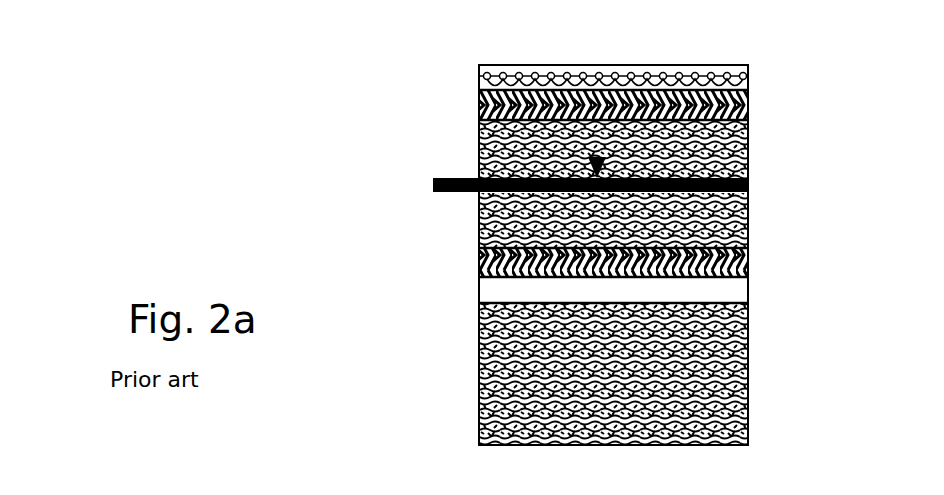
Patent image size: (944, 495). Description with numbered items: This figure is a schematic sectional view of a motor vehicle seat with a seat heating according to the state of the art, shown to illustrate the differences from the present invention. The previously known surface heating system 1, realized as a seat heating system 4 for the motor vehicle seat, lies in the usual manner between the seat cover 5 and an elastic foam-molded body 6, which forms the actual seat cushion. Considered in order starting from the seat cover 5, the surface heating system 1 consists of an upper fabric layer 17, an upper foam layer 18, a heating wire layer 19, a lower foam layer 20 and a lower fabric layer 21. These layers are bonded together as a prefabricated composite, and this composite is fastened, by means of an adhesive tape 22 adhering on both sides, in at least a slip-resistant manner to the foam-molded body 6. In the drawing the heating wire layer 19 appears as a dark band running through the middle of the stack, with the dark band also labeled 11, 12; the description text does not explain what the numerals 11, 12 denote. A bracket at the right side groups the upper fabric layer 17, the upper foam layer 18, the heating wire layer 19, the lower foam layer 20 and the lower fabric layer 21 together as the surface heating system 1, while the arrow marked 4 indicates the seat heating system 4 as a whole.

The surface heating system 1 is at (760, 88).
The seat heating system 4 is at (455, 250).
The seat cover 5 is at (667, 66).
The elastic foam-molded body 6 is at (749, 408).
The electrode 11 is at (433, 183).
The electrode 12 is at (292, 141).
The upper fabric layer 17 is at (480, 108).
The upper foam layer 18 is at (480, 150).
The heating wire layer 19 is at (480, 161).
The lower foam layer 20 is at (479, 252).
The lower fabric layer 21 is at (749, 278).
The adhesive tape 22 is at (703, 291).